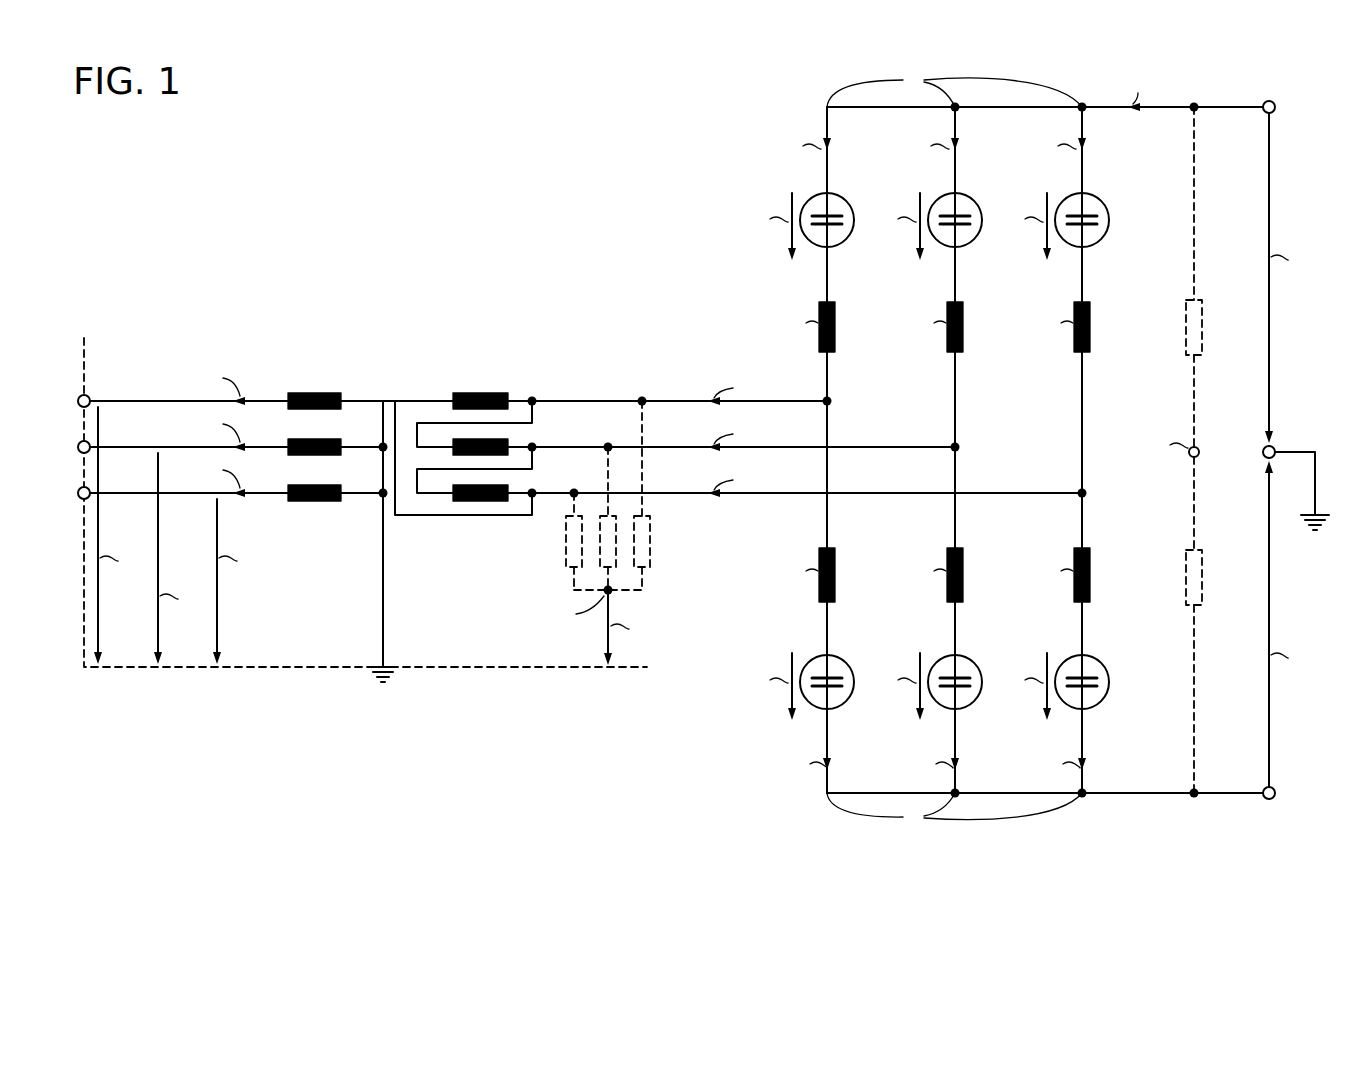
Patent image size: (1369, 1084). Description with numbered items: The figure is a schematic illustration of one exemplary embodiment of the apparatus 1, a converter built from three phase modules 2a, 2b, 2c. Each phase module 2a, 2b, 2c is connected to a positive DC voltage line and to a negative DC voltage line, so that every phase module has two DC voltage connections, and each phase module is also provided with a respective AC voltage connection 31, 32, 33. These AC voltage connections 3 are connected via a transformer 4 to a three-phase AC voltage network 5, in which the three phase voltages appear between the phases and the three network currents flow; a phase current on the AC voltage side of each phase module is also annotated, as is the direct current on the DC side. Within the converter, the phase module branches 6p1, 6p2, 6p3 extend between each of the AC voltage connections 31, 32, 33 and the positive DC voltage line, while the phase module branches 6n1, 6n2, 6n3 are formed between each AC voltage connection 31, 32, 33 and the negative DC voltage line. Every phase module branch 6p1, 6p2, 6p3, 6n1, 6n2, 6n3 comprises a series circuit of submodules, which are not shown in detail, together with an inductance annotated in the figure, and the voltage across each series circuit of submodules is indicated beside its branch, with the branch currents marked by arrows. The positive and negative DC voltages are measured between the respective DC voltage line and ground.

The apparatus 1 is at (934, 430).
The phase module 2a is at (765, 450).
The phase module 2b is at (948, 411).
The phase module 2c is at (1075, 411).
The AC voltage connection 3 is at (975, 462).
The AC voltage connection 31 is at (831, 403).
The AC voltage connection 32 is at (959, 449).
The AC voltage connection 33 is at (1086, 495).
The transformer 4 is at (513, 479).
The three-phase AC voltage network 5 is at (361, 439).
The phase module branch 6p1 is at (826, 246).
The phase module branch 6p2 is at (954, 246).
The phase module branch 6p3 is at (1081, 246).
The phase module branch 6n1 is at (824, 663).
The phase module branch 6n2 is at (952, 663).
The phase module branch 6n3 is at (1081, 663).